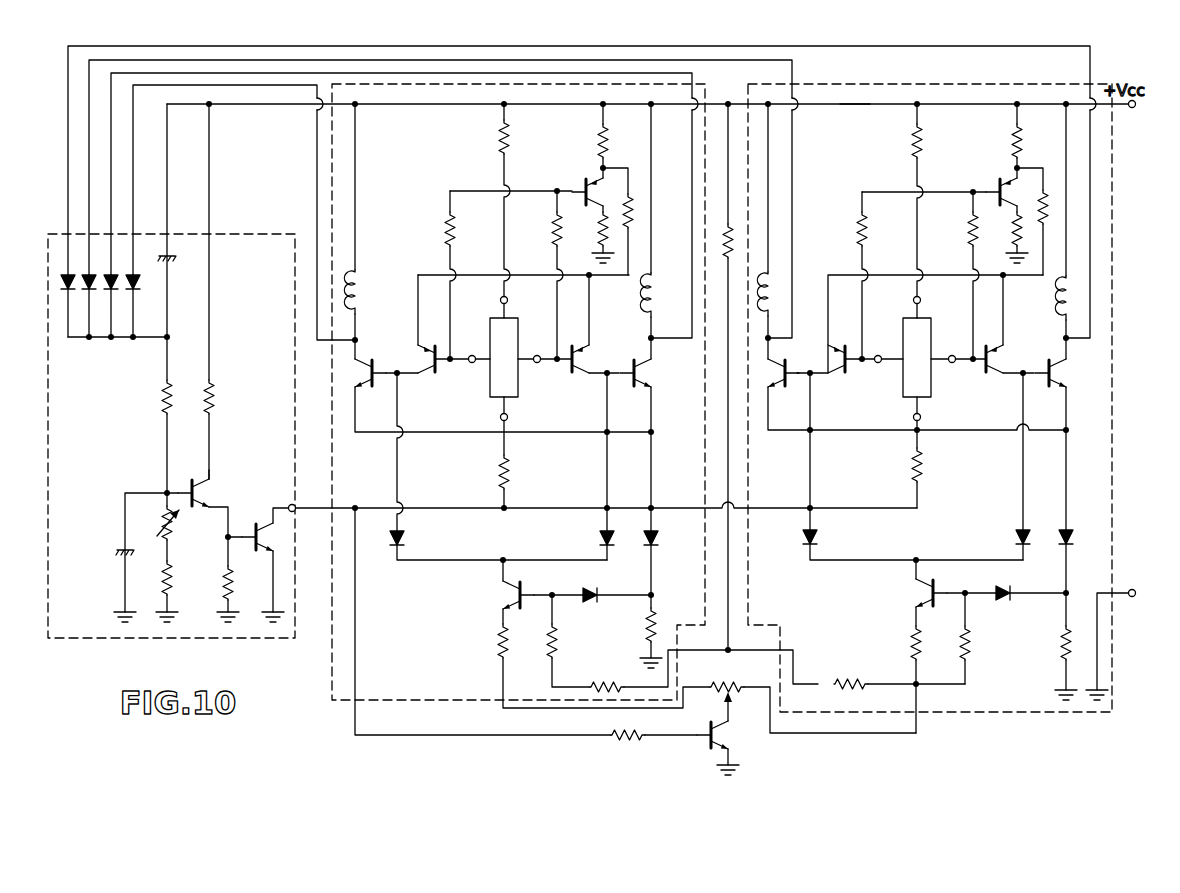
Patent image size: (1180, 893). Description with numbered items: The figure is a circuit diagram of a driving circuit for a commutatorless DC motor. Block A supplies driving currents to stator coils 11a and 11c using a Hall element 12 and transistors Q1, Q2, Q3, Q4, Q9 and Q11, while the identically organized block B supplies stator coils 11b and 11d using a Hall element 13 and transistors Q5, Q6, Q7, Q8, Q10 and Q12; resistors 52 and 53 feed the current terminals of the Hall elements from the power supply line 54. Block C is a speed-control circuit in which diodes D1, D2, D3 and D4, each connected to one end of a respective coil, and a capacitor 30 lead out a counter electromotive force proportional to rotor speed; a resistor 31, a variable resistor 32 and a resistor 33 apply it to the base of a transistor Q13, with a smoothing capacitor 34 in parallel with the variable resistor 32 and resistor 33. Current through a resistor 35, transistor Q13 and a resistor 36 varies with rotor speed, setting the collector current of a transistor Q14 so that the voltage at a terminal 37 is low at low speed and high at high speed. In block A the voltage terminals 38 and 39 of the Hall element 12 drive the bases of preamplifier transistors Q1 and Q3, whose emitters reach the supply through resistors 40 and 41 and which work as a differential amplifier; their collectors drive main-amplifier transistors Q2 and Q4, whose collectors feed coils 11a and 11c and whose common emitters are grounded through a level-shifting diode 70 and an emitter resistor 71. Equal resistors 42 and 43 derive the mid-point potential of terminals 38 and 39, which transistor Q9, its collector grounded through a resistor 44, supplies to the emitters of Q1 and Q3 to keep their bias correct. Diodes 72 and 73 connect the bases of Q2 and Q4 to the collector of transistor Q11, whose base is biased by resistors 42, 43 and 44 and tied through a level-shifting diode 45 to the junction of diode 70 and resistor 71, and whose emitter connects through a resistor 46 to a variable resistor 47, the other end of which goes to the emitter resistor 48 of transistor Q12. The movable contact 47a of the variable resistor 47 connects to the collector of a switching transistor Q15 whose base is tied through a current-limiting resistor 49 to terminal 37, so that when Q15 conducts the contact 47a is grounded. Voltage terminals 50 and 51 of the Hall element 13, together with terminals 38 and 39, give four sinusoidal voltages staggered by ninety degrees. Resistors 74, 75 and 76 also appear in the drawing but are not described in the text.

The capacitor 30 is at (173, 259).
The resistor 31 is at (160, 394).
The variable resistor 32 is at (174, 529).
The resistor 33 is at (174, 576).
The smoothing capacitor 34 is at (118, 549).
The resistor 35 is at (215, 397).
The resistor 36 is at (223, 592).
The terminal 37 is at (290, 504).
The voltage terminal 38 is at (470, 365).
The voltage terminal 39 is at (538, 365).
The resistor 40 is at (633, 213).
The resistor 41 is at (598, 139).
The resistor 42 is at (444, 231).
The resistor 43 is at (552, 233).
The resistor 44 is at (597, 235).
The diode 45 is at (593, 590).
The resistor 46 is at (497, 642).
The variable resistor 47 is at (713, 683).
The movable selector contact 47a is at (730, 704).
The emitter resistor 48 is at (908, 643).
The resistor 49 is at (622, 741).
The voltage terminal 50 is at (877, 365).
The voltage terminal 51 is at (953, 365).
The resistor 52 is at (499, 138).
The resistor 53 is at (906, 142).
The power supply line 54 is at (853, 108).
The diode 70 is at (658, 538).
The emitter resistor 71 is at (646, 625).
The diode 72 is at (404, 538).
The diode 73 is at (601, 538).
The resistor 74 is at (724, 268).
The resistor 75 is at (602, 682).
The resistor 76 is at (558, 641).
The stator coil 11a is at (362, 306).
The stator coil 11b is at (776, 292).
The stator coil 11c is at (644, 303).
The stator coil 11d is at (1059, 305).
The Hall element 12 is at (487, 399).
The Hall element 13 is at (932, 398).
The transistor Q1 is at (430, 357).
The transistor Q2 is at (379, 392).
The transistor Q3 is at (592, 356).
The transistor Q4 is at (656, 390).
The transistor Q5 is at (838, 378).
The transistor Q6 is at (786, 392).
The transistor Q7 is at (994, 355).
The transistor Q8 is at (1058, 373).
The transistor Q9 is at (584, 186).
The transistor Q10 is at (997, 189).
The transistor Q11 is at (514, 594).
The transistor Q12 is at (919, 595).
The transistor Q13 is at (200, 488).
The transistor Q14 is at (259, 530).
The transistor Q15 is at (730, 739).
The diode D1 is at (136, 288).
The diode D2 is at (114, 272).
The diode D3 is at (92, 292).
The diode D4 is at (66, 292).
The block A is at (332, 702).
The block B is at (1072, 712).
The block C is at (200, 640).